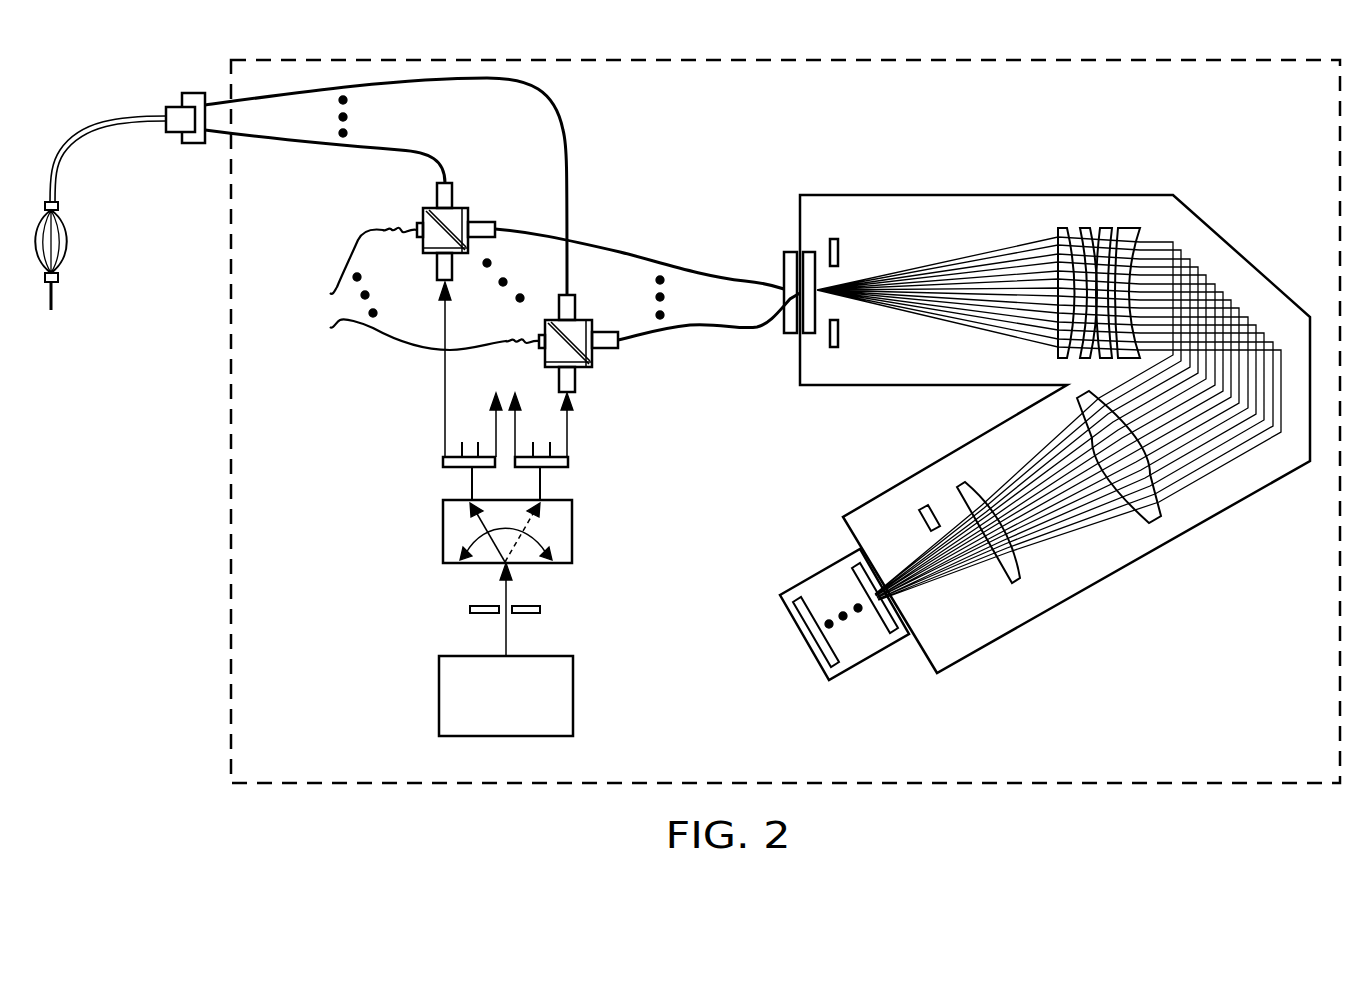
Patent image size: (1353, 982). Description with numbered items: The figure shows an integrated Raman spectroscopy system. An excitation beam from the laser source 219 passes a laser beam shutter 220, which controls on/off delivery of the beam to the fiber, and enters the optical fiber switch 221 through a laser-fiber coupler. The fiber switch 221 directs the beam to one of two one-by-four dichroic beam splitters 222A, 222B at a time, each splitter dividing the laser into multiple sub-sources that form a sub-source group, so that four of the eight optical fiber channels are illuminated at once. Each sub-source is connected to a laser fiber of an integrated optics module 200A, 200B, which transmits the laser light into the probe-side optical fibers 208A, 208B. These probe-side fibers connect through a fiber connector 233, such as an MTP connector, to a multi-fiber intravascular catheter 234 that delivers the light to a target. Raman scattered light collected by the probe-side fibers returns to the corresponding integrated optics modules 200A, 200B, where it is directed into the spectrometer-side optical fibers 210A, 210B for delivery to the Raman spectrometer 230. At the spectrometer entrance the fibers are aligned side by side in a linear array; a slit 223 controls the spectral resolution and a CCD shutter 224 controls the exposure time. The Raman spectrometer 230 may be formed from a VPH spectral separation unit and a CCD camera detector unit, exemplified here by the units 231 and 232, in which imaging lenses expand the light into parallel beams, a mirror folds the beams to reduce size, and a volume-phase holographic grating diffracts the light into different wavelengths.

The integrated optics module 200A is at (422, 253).
The integrated optics module 200B is at (587, 320).
The probe-side optical fiber 208A is at (367, 148).
The probe-side optical fiber 208B is at (502, 87).
The spectrometer-side optical fiber 210A is at (707, 273).
The spectrometer-side optical fiber 210B is at (702, 330).
The laser source 219 is at (439, 692).
The laser beam shutter 220 is at (468, 609).
The optical fiber switch 221 is at (443, 532).
The beam splitter 222A is at (443, 460).
The beam splitter 222B is at (568, 460).
The slit 223 is at (790, 335).
The CCD shutter 224 is at (832, 347).
The Raman spectrometer 230 is at (778, 710).
The spectrometer housing 231 is at (1122, 566).
The detector 232 is at (870, 653).
The fiber connector 233 is at (212, 152).
The multi-fiber intravascular catheter 234 is at (70, 240).